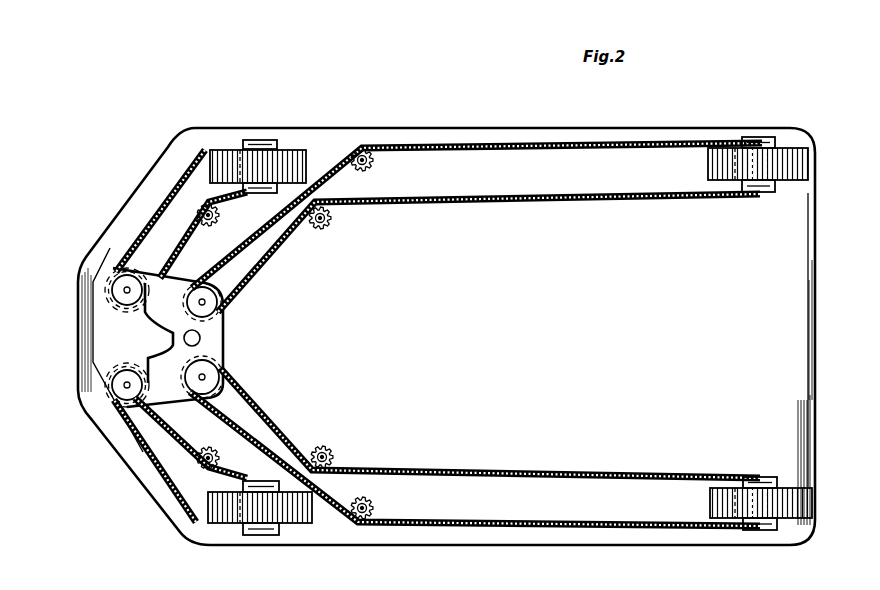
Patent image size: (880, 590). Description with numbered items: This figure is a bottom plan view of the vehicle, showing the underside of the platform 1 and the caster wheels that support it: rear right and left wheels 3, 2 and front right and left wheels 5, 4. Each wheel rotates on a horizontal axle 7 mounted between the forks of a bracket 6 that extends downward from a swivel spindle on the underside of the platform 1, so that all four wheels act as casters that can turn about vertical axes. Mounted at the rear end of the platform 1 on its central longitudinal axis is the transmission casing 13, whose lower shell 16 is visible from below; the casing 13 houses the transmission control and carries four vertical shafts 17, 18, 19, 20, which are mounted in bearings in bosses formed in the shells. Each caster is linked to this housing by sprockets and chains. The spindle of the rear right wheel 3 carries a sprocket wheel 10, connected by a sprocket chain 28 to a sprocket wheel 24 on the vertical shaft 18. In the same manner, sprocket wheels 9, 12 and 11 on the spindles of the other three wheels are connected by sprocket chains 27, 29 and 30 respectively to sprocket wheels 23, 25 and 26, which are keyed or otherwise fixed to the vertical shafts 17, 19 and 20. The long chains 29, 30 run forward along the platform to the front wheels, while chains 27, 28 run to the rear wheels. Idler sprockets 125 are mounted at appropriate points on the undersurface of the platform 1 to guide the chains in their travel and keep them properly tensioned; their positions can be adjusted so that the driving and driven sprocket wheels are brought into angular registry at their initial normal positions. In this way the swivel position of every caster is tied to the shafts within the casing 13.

The platform 1 is at (446, 336).
The rear left wheel 2 is at (308, 524).
The rear right wheel 3 is at (318, 160).
The front left wheel 4 is at (810, 530).
The front right wheel 5 is at (798, 148).
The bracket 6 is at (268, 140).
The horizontal axle 7 is at (296, 160).
The sprocket wheel 9 is at (234, 525).
The sprocket wheel 10 is at (238, 150).
The sprocket wheel 11 is at (732, 150).
The sprocket wheel 12 is at (730, 528).
The transmission casing 13 is at (106, 272).
The lower shell 16 is at (103, 318).
The vertical shaft 17 is at (100, 420).
The vertical shaft 18 is at (123, 262).
The vertical shaft 19 is at (235, 384).
The vertical shaft 20 is at (282, 236).
The sprocket wheel 23 is at (120, 466).
The sprocket wheel 24 is at (152, 285).
The sprocket wheel 25 is at (207, 452).
The sprocket wheel 26 is at (242, 302).
The sprocket chain 27 is at (170, 488).
The sprocket chain 28 is at (165, 190).
The sprocket chain 29 is at (490, 524).
The sprocket chain 30 is at (488, 146).
The idler sprockets 125 is at (364, 170).